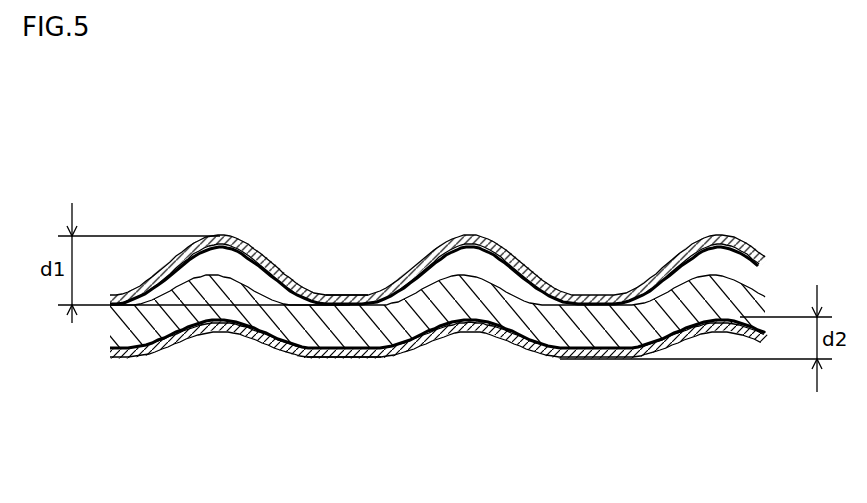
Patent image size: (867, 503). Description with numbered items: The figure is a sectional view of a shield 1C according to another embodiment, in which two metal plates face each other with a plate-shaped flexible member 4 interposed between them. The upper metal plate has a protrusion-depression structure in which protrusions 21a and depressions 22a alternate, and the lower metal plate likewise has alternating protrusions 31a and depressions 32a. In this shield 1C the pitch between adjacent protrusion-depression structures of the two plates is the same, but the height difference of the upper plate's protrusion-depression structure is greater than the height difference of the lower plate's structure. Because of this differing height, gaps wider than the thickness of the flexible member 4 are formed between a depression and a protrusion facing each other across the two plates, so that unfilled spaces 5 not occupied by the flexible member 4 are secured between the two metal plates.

The shield 1C is at (705, 180).
The flexible member 4 is at (689, 302).
The unfilled spaces 5 is at (227, 262).
The protrusions 21a is at (221, 235).
The depressions 22a is at (346, 298).
The protrusions 31a is at (346, 358).
The depressions 32a is at (218, 333).